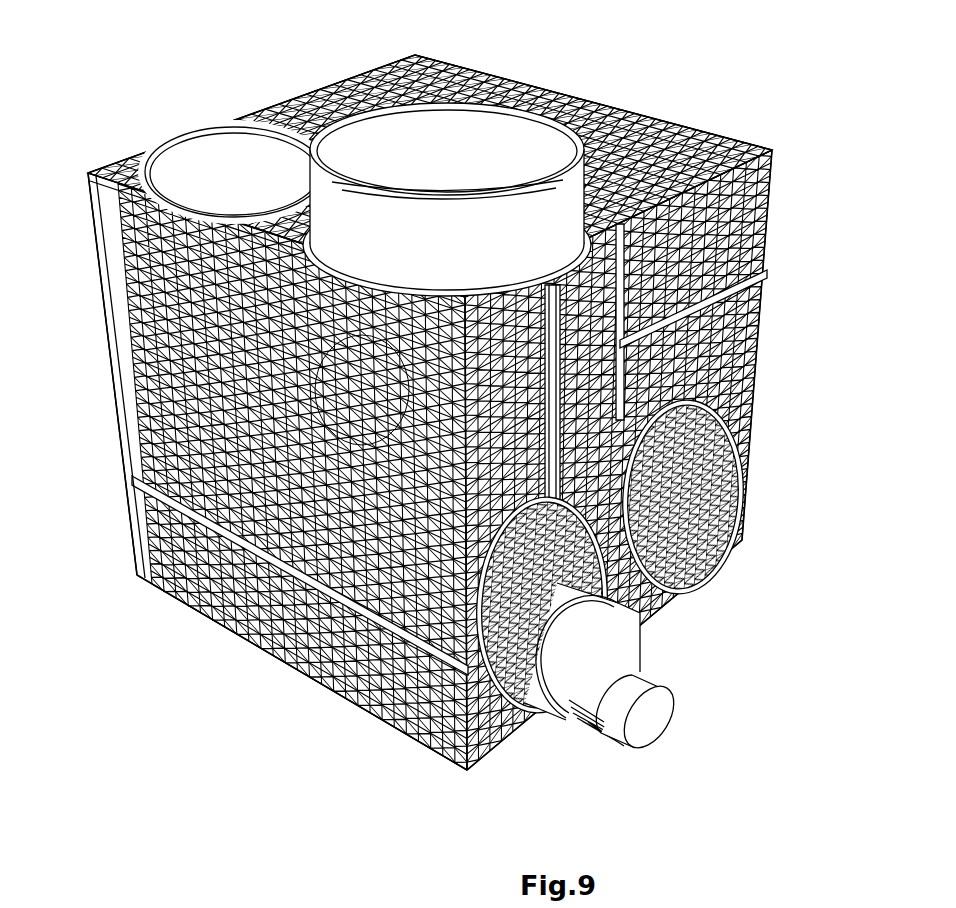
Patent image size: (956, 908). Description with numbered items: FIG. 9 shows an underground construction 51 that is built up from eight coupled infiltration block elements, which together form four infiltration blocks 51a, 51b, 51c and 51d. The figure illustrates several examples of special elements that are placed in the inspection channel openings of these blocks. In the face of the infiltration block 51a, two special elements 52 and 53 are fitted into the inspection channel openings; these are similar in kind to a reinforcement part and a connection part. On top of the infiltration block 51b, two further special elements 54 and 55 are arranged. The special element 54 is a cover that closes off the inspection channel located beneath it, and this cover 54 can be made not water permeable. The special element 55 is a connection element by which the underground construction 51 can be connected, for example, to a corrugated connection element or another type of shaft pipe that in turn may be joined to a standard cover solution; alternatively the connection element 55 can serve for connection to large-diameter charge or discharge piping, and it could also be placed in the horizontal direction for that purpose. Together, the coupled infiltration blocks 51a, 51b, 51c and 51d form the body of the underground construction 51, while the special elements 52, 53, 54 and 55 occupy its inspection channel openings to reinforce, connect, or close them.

The underground construction 51 is at (803, 87).
The infiltration block 51a is at (397, 700).
The infiltration block 51b is at (195, 590).
The infiltration block 51c is at (447, 66).
The infiltration block 51d is at (140, 289).
The special element 52 is at (727, 467).
The special element 53 is at (577, 625).
The cover 54 is at (234, 172).
The connection element 55 is at (447, 199).